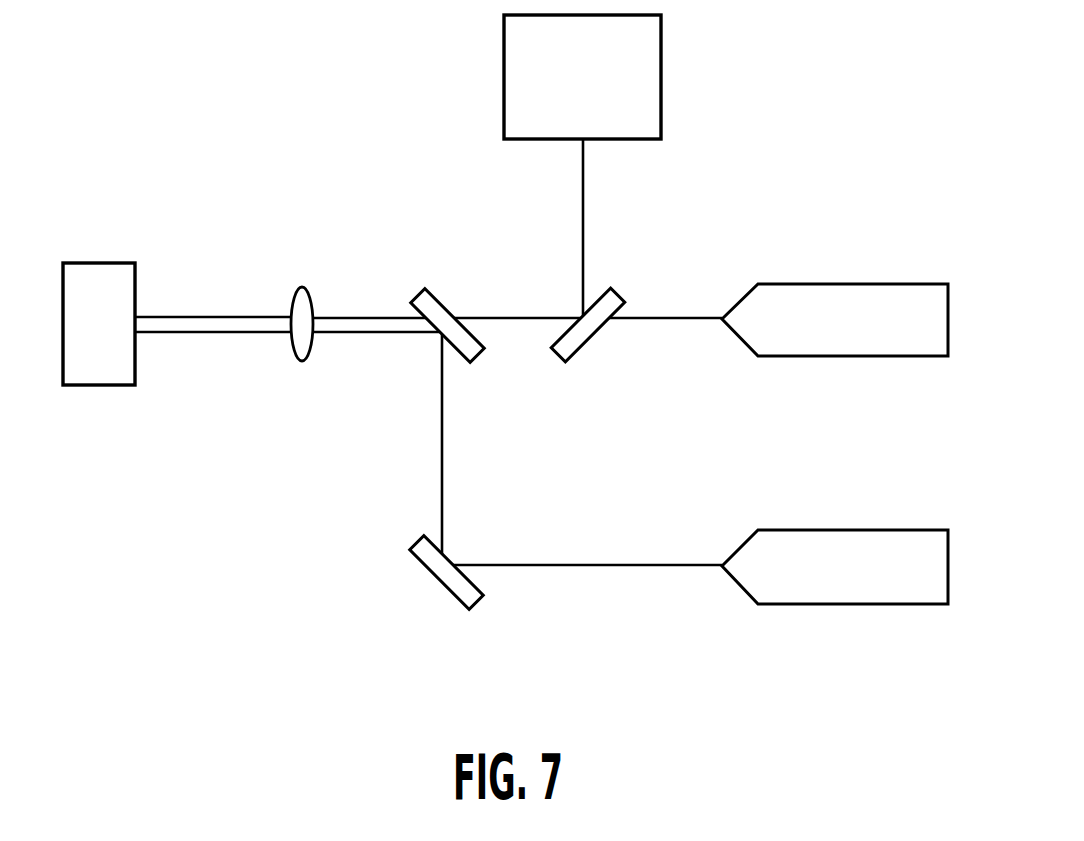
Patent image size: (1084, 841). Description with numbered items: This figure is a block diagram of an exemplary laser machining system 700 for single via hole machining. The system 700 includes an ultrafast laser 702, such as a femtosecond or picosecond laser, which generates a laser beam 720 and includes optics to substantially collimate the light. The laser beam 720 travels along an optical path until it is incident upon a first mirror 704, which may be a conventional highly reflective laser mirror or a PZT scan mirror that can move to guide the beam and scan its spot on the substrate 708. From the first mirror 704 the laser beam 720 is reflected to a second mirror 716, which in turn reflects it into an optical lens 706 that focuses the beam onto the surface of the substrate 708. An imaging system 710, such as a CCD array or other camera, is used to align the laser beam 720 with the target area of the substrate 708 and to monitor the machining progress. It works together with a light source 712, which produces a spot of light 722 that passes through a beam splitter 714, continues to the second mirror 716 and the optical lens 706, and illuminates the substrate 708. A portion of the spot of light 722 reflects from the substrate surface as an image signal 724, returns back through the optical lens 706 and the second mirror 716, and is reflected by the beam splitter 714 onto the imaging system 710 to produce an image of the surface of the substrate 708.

The laser machining system 700 is at (862, 70).
The ultrafast laser 702 is at (844, 530).
The first mirror 704 is at (417, 543).
The optical lens 706 is at (300, 288).
The substrate 708 is at (92, 263).
The imaging system 710 is at (504, 89).
The light source 712 is at (843, 284).
The beam splitter 714 is at (577, 355).
The second mirror 716 is at (422, 288).
The laser beam 720 is at (588, 565).
The spot of light 722 is at (687, 318).
The image signal 724 is at (584, 204).